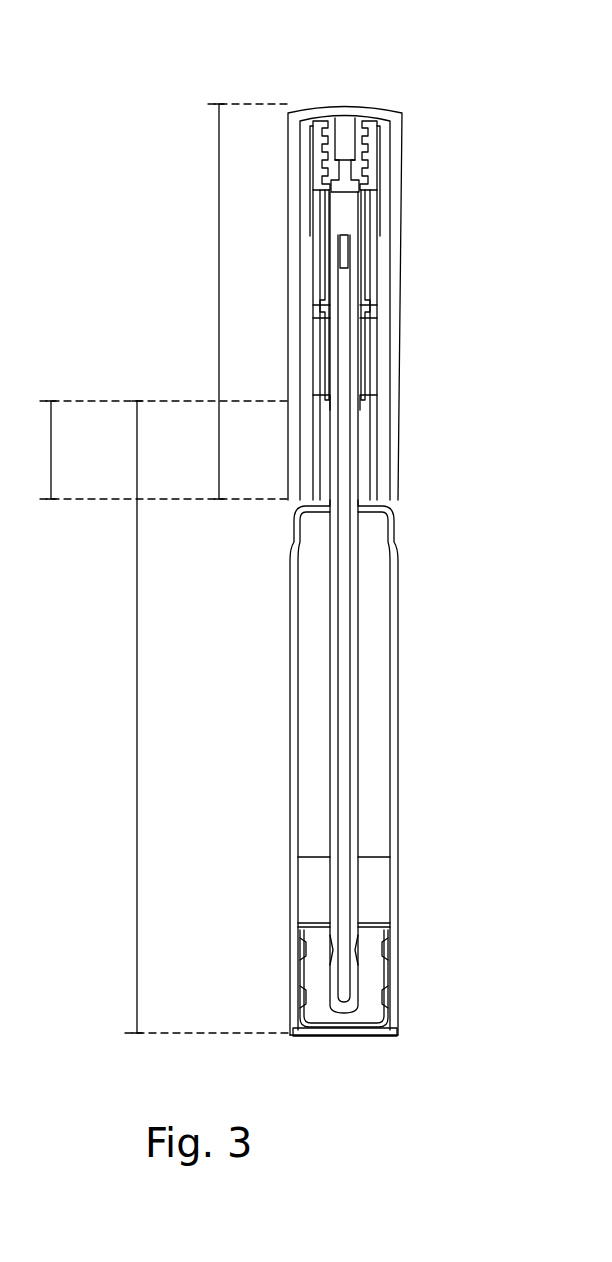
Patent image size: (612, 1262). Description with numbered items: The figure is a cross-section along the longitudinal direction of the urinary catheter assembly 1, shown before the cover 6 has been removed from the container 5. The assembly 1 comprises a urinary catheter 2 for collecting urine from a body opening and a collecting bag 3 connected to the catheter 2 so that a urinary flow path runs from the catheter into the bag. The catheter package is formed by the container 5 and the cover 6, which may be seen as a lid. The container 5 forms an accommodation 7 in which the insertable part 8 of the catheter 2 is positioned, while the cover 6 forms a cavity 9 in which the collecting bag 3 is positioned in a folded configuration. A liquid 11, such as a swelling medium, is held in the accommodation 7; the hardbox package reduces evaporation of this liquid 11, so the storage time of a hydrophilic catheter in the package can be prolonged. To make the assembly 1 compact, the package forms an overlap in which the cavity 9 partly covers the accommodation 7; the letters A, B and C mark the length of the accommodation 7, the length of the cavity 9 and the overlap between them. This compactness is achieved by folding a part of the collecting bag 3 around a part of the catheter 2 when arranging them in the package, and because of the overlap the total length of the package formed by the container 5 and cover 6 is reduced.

The urinary catheter assembly 1 is at (152, 78).
The urinary catheter 2 is at (348, 268).
The collecting bag 3 is at (385, 425).
The container 5 is at (398, 878).
The cover 6 is at (397, 172).
The accommodation 7 is at (378, 775).
The insertable part 8 is at (348, 648).
The cavity 9 is at (390, 237).
The liquid 11 is at (295, 700).